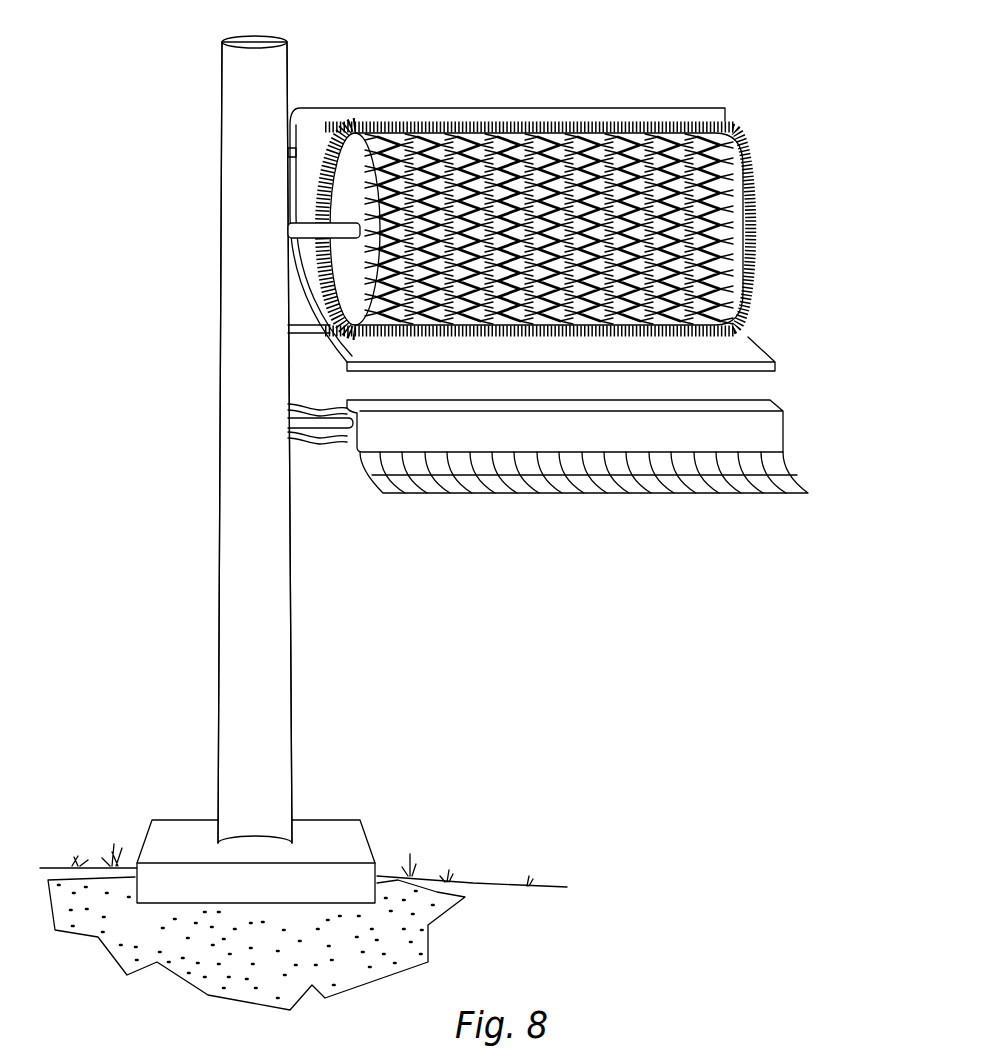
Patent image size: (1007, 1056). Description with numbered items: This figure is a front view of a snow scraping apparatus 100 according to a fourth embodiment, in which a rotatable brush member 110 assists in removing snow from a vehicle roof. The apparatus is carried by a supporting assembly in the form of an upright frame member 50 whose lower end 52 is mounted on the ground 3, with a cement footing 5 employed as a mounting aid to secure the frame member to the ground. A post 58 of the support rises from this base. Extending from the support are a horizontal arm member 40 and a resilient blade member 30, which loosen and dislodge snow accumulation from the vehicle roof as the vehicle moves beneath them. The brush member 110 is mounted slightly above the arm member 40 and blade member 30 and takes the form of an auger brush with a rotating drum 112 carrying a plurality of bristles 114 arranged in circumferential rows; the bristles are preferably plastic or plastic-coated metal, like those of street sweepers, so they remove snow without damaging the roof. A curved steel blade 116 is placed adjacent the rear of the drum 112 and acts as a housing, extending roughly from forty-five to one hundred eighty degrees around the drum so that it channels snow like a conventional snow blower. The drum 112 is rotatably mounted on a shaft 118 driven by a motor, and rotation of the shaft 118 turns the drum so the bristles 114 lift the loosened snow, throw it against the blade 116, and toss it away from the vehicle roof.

The ground 3 is at (118, 905).
The cement footing 5 is at (350, 858).
The resilient blade member 30 is at (548, 487).
The horizontal arm member 40 is at (618, 441).
The upright frame member 50 is at (292, 655).
The lower end 52 is at (275, 835).
The post 58 is at (218, 312).
The scraping apparatus 100 is at (548, 512).
The rotatable brush member 110 is at (581, 169).
The rotating drum 112 is at (500, 143).
The bristles 114 is at (612, 130).
The curved steel blade 116 is at (317, 122).
The shaft 118 is at (350, 231).